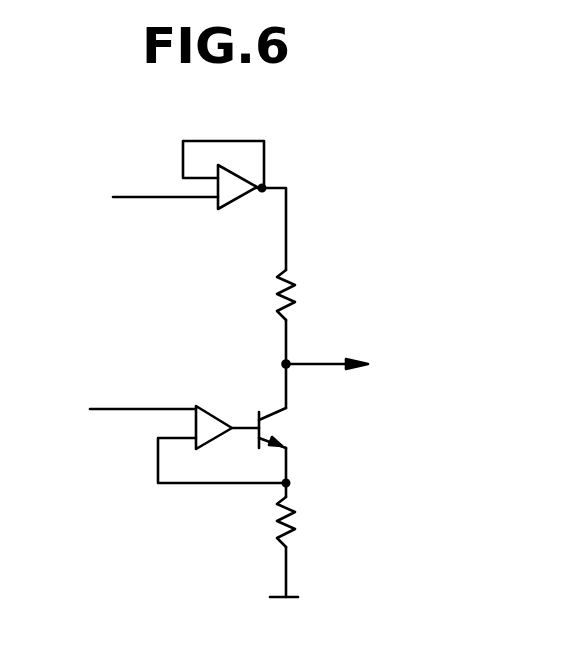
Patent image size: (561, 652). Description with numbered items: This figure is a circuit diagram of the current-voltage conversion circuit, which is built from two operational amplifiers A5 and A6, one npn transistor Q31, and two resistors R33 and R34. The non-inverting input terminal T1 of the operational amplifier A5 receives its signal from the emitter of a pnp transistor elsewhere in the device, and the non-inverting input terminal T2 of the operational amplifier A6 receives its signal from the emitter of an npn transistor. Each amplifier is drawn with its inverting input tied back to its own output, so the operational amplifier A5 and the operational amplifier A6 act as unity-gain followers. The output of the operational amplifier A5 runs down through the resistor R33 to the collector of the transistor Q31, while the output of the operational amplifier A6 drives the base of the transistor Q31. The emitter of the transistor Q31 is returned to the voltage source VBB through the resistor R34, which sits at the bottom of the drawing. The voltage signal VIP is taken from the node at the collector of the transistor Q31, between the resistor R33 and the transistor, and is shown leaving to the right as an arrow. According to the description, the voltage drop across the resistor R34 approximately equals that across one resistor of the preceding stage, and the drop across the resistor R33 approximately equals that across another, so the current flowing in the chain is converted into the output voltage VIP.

The non-inverting input terminal T1 is at (131, 188).
The non-inverting input terminal T2 is at (115, 403).
The operational amplifier A5 is at (224, 200).
The operational amplifier A6 is at (223, 431).
The resistor R33 is at (313, 295).
The resistor R34 is at (311, 522).
The npn transistor Q31 is at (285, 428).
The voltage signal VIP is at (346, 367).
The voltage source VBB is at (315, 609).